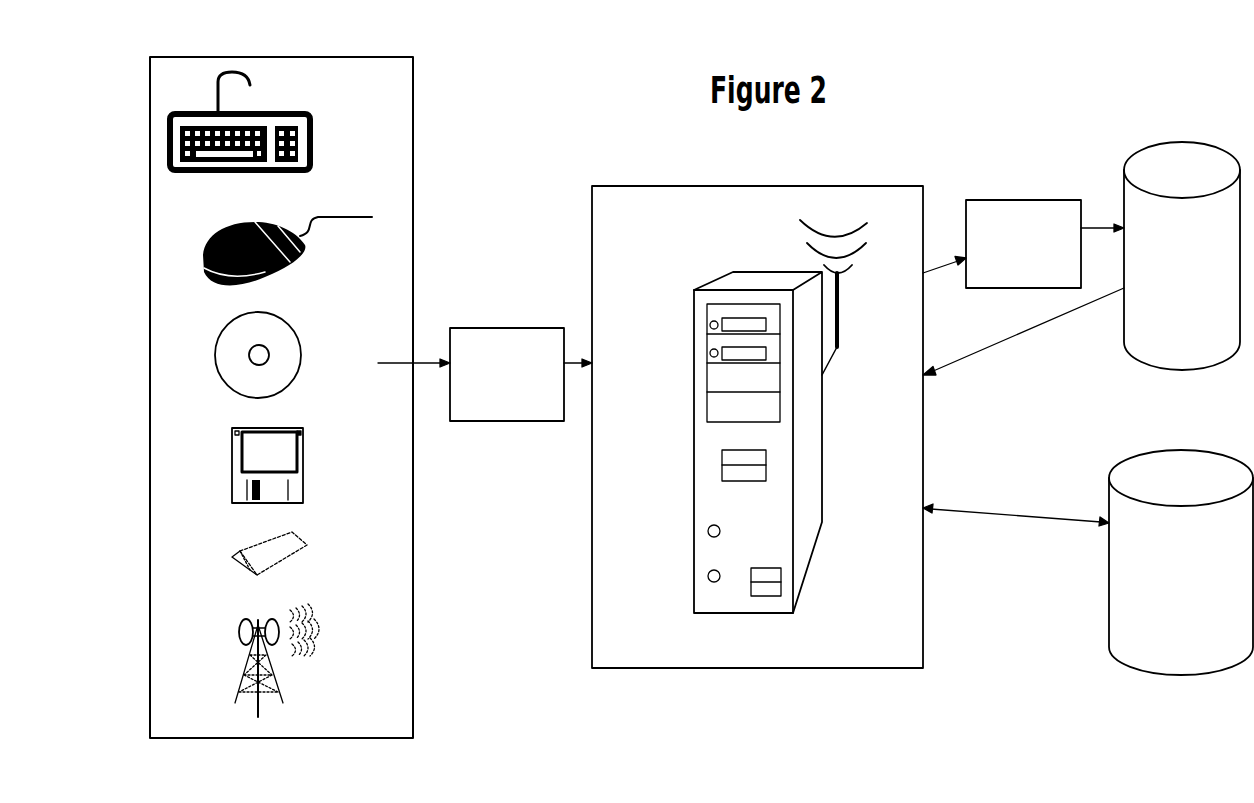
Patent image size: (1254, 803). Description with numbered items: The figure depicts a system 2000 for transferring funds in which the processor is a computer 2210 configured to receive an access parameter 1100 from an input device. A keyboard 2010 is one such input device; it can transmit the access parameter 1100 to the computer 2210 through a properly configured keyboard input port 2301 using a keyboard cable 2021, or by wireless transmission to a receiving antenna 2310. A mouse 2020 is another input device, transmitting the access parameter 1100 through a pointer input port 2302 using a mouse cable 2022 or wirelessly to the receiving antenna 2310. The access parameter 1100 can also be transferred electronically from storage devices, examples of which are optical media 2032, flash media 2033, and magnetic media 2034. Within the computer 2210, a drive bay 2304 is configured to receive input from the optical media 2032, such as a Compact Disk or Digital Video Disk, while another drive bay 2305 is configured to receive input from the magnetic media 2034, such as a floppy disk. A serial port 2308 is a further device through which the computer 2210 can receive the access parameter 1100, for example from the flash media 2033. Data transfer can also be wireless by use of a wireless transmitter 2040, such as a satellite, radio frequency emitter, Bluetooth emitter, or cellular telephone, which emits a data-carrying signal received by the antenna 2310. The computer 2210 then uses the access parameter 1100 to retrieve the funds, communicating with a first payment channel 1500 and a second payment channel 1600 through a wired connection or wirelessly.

The system 2000 is at (925, 141).
The keyboard 2010 is at (313, 147).
The keyboard cable 2021 is at (220, 100).
The mouse 2020 is at (306, 244).
The mouse cable 2022 is at (318, 216).
The optical media 2032 is at (268, 346).
The magnetic media 2034 is at (303, 452).
The flash media 2033 is at (260, 570).
The wireless transmitter 2040 is at (316, 614).
The access parameter 1100 is at (765, 310).
The computer 2210 is at (752, 186).
The drive bay 2304 is at (710, 353).
The drive bay 2305 is at (720, 465).
The keyboard input port 2301 is at (707, 538).
The pointer input port 2302 is at (707, 583).
The serial port 2308 is at (781, 582).
The receiving antenna 2310 is at (823, 373).
The first payment channel 1500 is at (1160, 352).
The second payment channel 1600 is at (1160, 655).